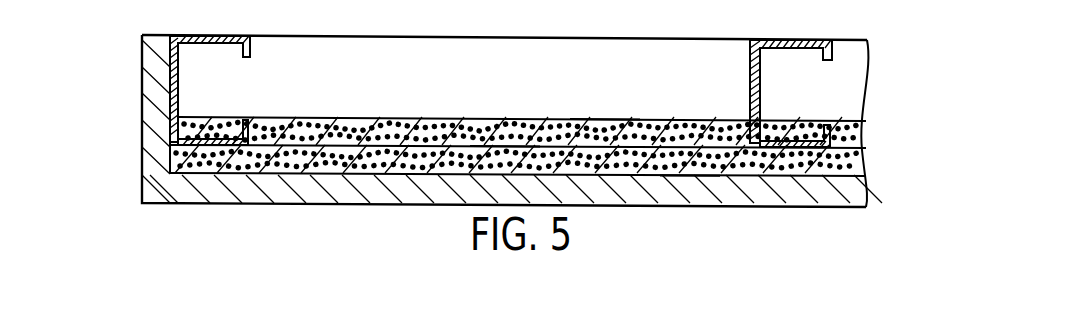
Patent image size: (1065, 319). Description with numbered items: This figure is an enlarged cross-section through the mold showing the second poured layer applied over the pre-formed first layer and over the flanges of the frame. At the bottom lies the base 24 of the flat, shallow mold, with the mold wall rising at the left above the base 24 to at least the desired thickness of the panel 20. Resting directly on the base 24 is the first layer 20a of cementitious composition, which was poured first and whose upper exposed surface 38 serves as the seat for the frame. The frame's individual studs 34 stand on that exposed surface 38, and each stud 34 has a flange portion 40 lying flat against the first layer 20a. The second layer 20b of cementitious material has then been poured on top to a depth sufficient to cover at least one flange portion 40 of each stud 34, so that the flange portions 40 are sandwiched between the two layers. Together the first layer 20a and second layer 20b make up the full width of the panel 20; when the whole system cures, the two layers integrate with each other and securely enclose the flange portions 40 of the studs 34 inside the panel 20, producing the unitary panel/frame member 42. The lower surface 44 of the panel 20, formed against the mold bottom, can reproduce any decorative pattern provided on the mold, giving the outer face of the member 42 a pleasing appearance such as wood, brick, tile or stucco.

The panel 20 is at (546, 157).
The first layer 20a is at (273, 168).
The second layer 20b is at (312, 118).
The base 24 is at (402, 195).
The stud 34 is at (212, 36).
The exposed surface 38 is at (504, 146).
The flange portion 40 is at (215, 140).
The unitary panel/frame member 42 is at (606, 105).
The surface of the panel 44 is at (683, 170).